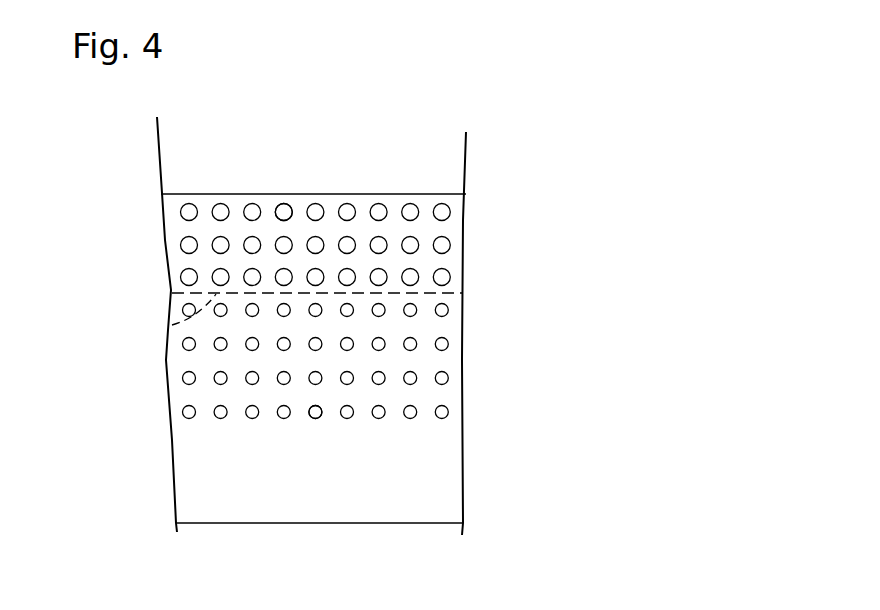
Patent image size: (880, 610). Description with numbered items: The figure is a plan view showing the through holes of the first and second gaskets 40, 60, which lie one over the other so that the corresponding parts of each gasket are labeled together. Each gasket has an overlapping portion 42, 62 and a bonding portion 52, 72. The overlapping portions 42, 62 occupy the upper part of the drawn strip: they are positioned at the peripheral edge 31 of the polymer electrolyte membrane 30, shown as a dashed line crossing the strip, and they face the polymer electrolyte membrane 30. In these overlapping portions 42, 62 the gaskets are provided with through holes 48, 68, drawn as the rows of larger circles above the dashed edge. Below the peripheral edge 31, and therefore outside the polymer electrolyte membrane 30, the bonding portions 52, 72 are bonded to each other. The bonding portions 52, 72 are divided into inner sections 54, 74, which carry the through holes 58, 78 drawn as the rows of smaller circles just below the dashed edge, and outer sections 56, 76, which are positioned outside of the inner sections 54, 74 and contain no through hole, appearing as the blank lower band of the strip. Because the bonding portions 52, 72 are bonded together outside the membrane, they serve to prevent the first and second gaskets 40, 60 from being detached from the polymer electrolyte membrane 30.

The polymer electrolyte membrane 30 is at (445, 163).
The peripheral edge 31 is at (173, 327).
The first gasket 40 is at (477, 358).
The second gasket 60 is at (677, 239).
The overlapping portion 42 is at (384, 245).
The overlapping portion 62 is at (447, 262).
The through holes 48 is at (312, 176).
The through holes 68 is at (285, 204).
The bonding portion 52 is at (431, 408).
The bonding portion 72 is at (583, 327).
The inner section 54 is at (385, 361).
The inner section 74 is at (447, 357).
The outer section 56 is at (382, 473).
The outer section 76 is at (442, 466).
The through holes 58 is at (326, 493).
The through holes 78 is at (316, 420).